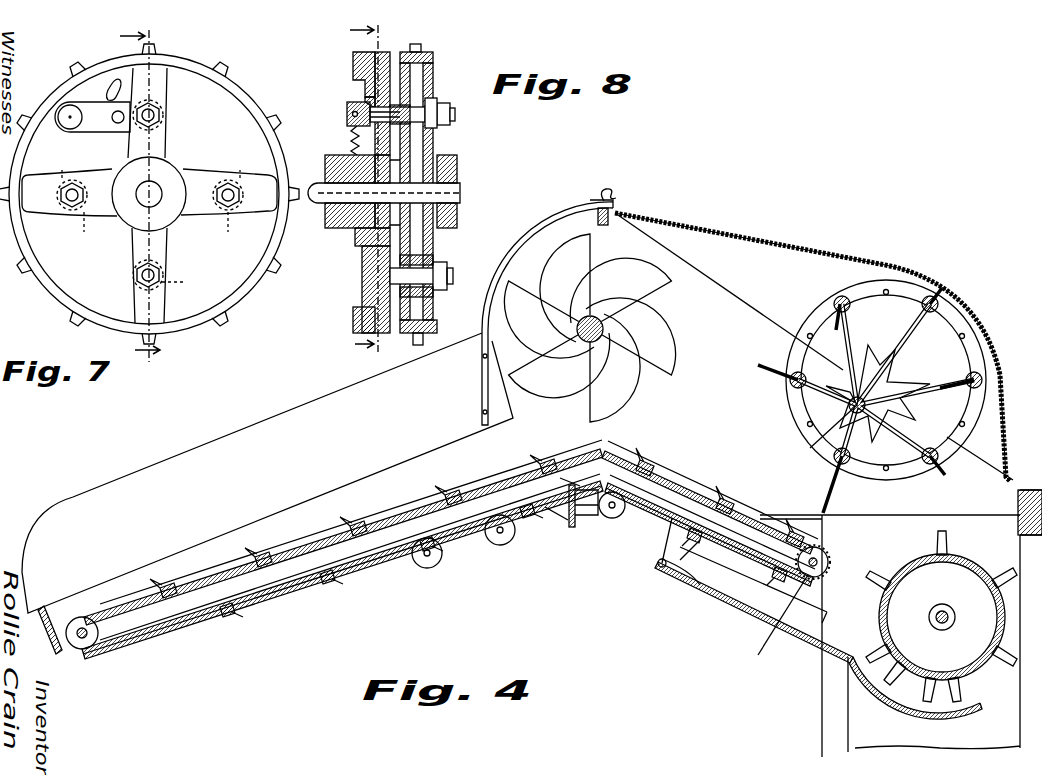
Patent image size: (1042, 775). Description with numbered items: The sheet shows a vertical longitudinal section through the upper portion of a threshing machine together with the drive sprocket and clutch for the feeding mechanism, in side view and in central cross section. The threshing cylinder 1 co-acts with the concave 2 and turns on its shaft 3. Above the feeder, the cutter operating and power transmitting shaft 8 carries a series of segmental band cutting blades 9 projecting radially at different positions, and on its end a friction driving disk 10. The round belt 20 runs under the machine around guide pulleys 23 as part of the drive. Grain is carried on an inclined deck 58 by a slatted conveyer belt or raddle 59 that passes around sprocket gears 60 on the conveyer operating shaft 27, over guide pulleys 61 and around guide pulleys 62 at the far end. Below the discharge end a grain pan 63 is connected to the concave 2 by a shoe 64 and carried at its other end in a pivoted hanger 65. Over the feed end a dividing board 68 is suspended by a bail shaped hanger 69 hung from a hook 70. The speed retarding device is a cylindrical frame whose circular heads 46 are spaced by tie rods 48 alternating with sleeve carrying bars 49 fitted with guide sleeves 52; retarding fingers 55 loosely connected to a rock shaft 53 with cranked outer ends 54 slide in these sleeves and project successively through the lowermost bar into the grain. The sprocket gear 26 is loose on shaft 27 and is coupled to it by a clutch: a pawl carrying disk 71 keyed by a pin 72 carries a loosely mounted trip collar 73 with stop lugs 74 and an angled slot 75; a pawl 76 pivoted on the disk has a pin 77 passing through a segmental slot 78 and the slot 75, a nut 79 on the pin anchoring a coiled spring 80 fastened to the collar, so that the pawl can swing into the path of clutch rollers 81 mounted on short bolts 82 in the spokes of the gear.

In FIG. 4, the threshing cylinder 1 is at (955, 578).
In FIG. 4, the concave 2 is at (895, 692).
In FIG. 4, the shaft of the cylinder 3 is at (946, 613).
In FIG. 7, the cutter operating and power transmitting shaft 8 is at (140, 197).
In FIG. 4, the cutter operating and power transmitting shaft 8 is at (580, 320).
In FIG. 4, the segmental band cutting blades 9 is at (586, 262).
In FIG. 8, the friction driving disk 10 is at (365, 187).
In FIG. 4, the round belt 20 is at (573, 528).
In FIG. 4, the guide pulleys 23 is at (558, 515).
In FIG. 7, the sprocket gear 26 is at (232, 90).
In FIG. 8, the sprocket gear 26 is at (418, 62).
In FIG. 7, the conveyer operating shaft 27 is at (152, 192).
In FIG. 8, the conveyer operating shaft 27 is at (452, 197).
In FIG. 4, the conveyer operating shaft 27 is at (803, 590).
In FIG. 4, the circular heads 46 is at (905, 288).
In FIG. 4, the tie rods 48 is at (808, 333).
In FIG. 4, the sleeve carrying bars 49 is at (940, 300).
In FIG. 4, the guide sleeve 52 is at (850, 300).
In FIG. 4, the rock shaft 53 is at (815, 445).
In FIG. 4, the cranked outer ends 54 is at (888, 380).
In FIG. 4, the retarding fingers 55 is at (768, 366).
In FIG. 4, the deck 58 is at (295, 530).
In FIG. 4, the slatted conveyer belt or raddle 59 is at (284, 596).
In FIG. 4, the sprocket gears 60 is at (822, 558).
In FIG. 4, the guide pulleys 61 is at (500, 546).
In FIG. 4, the guide pulleys 62 is at (86, 652).
In FIG. 4, the grain pan 63 is at (755, 590).
In FIG. 4, the shoe 64 is at (815, 640).
In FIG. 4, the hanger 65 is at (660, 567).
In FIG. 4, the dividing board 68 is at (267, 493).
In FIG. 4, the bail shaped hanger 69 is at (582, 212).
In FIG. 4, the hook 70 is at (614, 195).
In FIG. 7, the pawl carrying disk 71 is at (60, 272).
In FIG. 8, the pawl carrying disk 71 is at (382, 52).
In FIG. 8, the pin 72 is at (358, 240).
In FIG. 8, the trip collar 73 is at (364, 280).
In FIG. 8, the stop lugs 74 is at (352, 62).
In FIG. 8, the slot 75 is at (363, 92).
In FIG. 7, the pawl 76 is at (82, 125).
In FIG. 8, the pawl 76 is at (430, 108).
In FIG. 7, the pin 77 is at (117, 124).
In FIG. 8, the pin 77 is at (398, 106).
In FIG. 7, the segmental slot 78 is at (110, 93).
In FIG. 8, the segmental slot 78 is at (386, 108).
In FIG. 8, the nut 79 is at (346, 124).
In FIG. 8, the coiled spring 80 is at (354, 132).
In FIG. 7, the clutch rollers 81 is at (151, 232).
In FIG. 8, the clutch rollers 81 is at (418, 292).
In FIG. 7, the short bolts 82 is at (232, 182).
In FIG. 8, the short bolts 82 is at (455, 114).